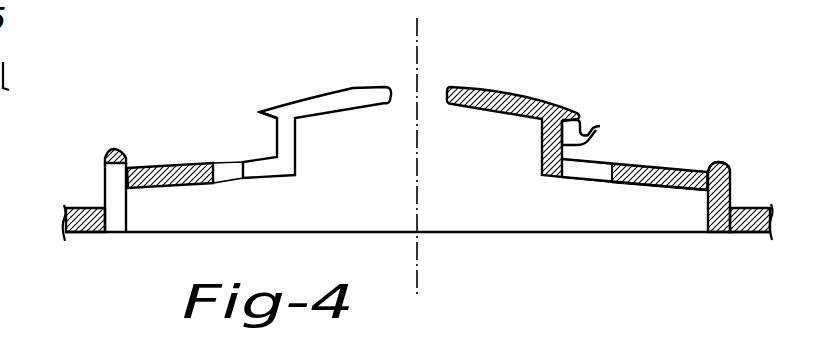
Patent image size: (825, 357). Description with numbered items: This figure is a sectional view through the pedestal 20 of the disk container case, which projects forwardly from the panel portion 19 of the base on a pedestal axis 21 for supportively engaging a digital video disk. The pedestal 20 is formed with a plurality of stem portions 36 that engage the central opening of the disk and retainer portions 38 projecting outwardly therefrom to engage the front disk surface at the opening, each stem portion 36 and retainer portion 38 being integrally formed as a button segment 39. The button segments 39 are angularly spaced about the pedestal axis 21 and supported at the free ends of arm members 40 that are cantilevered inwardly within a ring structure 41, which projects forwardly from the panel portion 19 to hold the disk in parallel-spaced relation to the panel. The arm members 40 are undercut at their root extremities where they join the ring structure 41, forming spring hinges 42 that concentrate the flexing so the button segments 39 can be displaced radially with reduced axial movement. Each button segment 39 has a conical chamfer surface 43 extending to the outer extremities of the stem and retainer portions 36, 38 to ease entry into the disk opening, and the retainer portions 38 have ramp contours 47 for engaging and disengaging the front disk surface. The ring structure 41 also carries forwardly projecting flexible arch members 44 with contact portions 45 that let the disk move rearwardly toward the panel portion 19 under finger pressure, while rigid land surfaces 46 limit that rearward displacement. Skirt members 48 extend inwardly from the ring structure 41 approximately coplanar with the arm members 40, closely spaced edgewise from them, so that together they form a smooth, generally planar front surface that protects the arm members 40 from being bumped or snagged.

The panel portion 19 is at (757, 209).
The pedestal 20 is at (134, 238).
The pedestal axis 21 is at (417, 30).
The stem portion 36 is at (600, 127).
The retainer portion 38 is at (598, 125).
The button segment 39 is at (322, 94).
The arm member 40 is at (623, 184).
The ring structure 41 is at (733, 187).
The spring hinge 42 is at (700, 189).
The conical chamfer surface 43 is at (583, 122).
The flexible arch member 44 is at (106, 160).
The contact portion 45 is at (116, 147).
The rigid land surface 46 is at (722, 163).
The ramp contour 47 is at (260, 116).
The skirt member 48 is at (213, 184).